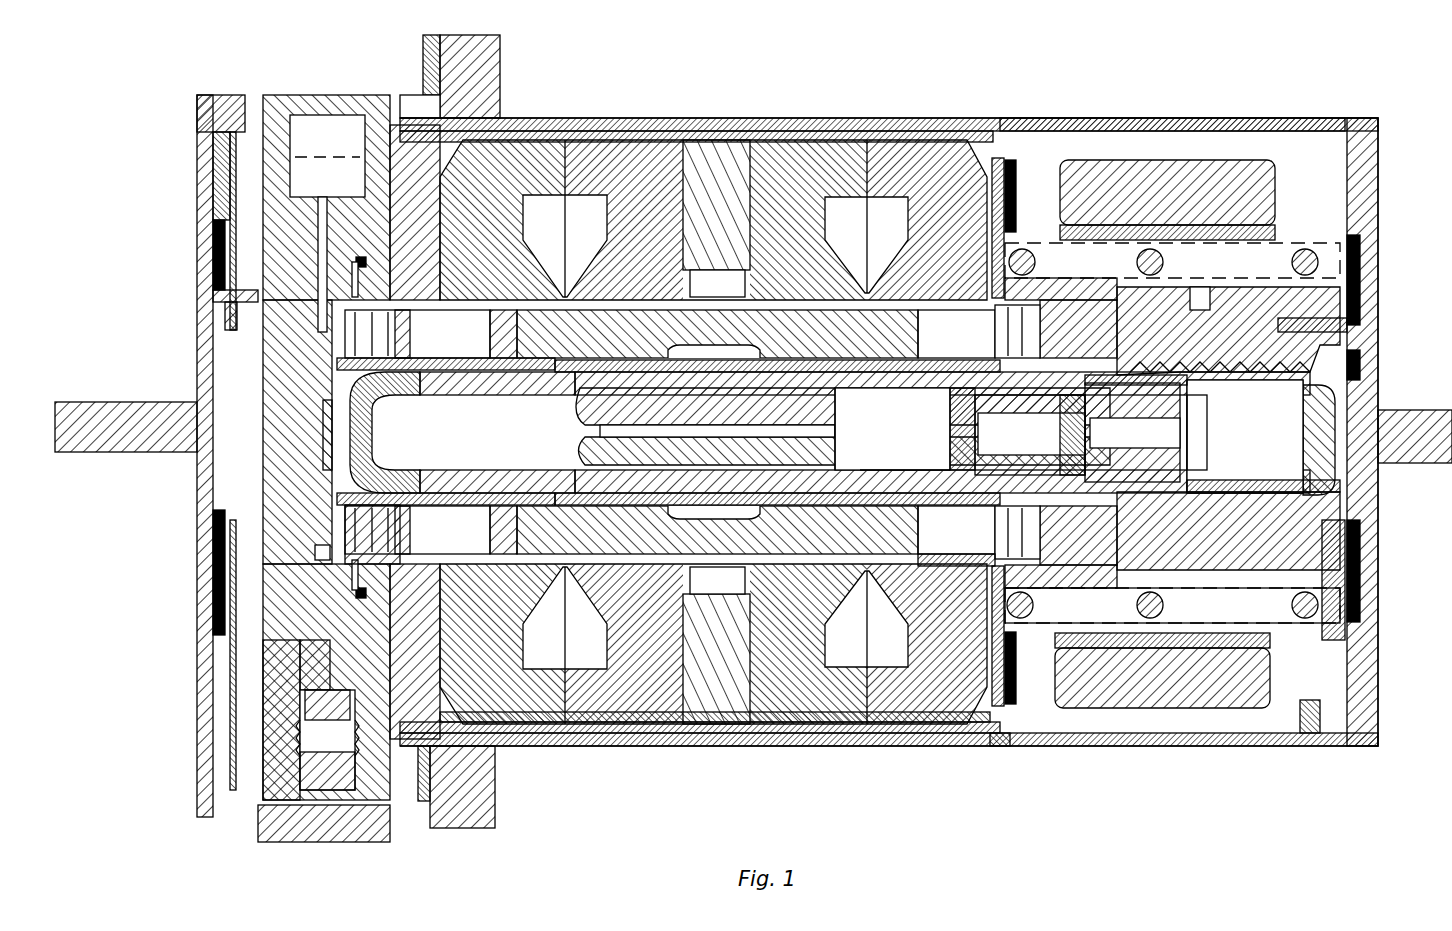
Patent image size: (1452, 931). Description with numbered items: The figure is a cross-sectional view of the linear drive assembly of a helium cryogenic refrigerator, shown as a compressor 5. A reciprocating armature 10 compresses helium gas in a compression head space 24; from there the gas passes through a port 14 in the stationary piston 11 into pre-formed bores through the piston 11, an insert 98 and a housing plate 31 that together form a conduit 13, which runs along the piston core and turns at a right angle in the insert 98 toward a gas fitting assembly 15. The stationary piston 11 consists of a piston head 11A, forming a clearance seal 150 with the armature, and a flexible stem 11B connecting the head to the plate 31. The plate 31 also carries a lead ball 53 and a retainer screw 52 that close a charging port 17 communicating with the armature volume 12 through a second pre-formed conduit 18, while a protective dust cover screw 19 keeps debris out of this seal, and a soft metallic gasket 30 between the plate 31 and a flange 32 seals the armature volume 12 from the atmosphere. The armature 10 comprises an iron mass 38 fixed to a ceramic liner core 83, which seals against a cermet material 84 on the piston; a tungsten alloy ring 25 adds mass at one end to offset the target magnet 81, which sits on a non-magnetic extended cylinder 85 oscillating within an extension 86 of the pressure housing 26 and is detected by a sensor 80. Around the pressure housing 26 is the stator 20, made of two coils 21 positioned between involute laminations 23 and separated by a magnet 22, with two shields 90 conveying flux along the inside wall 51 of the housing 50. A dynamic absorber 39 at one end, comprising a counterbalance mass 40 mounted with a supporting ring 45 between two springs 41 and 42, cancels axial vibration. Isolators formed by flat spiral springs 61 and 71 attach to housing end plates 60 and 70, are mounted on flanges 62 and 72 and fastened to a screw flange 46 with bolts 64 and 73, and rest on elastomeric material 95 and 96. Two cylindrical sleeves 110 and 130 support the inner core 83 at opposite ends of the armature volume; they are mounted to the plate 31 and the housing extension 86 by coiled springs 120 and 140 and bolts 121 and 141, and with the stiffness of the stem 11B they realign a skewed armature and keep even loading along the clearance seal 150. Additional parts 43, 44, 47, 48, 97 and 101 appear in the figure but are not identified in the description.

The compressor 5 is at (1206, 766).
The reciprocating armature 10 is at (920, 323).
The stationary piston 11 is at (566, 458).
The piston head 11A is at (582, 396).
The flexible stem 11B is at (478, 400).
The armature volume 12 is at (452, 342).
The conduit 13 is at (312, 300).
The port 14 is at (816, 438).
The gas fitting assembly 15 is at (343, 140).
The port 17 is at (300, 648).
The second pre-formed conduit 18 is at (320, 550).
The protective dust cover screw 19 is at (388, 838).
The stator 20 is at (800, 178).
The coils 21 is at (886, 205).
The magnet 22 is at (720, 150).
The involute laminations 23 is at (563, 726).
The compression head space 24 is at (914, 442).
The tungsten alloy ring 25 is at (494, 528).
The pressure housing 26 is at (942, 562).
The soft metallic gasket 30 is at (360, 255).
The plate 31 is at (300, 234).
The flange 32 is at (359, 602).
The iron mass 38 is at (565, 296).
The dynamic absorber 39 is at (1264, 150).
The counterbalance mass 40 is at (1140, 165).
The spring 41 is at (1036, 262).
The spring 42 is at (1306, 250).
The right hub 43 is at (1250, 524).
The ball 44 is at (1125, 322).
The supporting ring 45 is at (1258, 650).
The screw flange 46 is at (1355, 592).
The end plate 47 is at (1305, 748).
The partition plate 48 is at (1010, 165).
The housing 50 is at (918, 748).
The inside wall 51 is at (826, 738).
The retainer screw 52 is at (327, 740).
The lead ball 53 is at (310, 680).
The housing end plate 60 is at (1378, 228).
The isolator 61 is at (1362, 266).
The flange 62 is at (1362, 362).
The bolt 64 is at (1362, 330).
The housing end plate 70 is at (197, 215).
The isolator 71 is at (212, 297).
The flange 72 is at (222, 345).
The bolt 73 is at (212, 318).
The sensor 80 is at (1380, 410).
The target magnet 81 is at (1214, 395).
The liner core 83 is at (906, 390).
The cermet material 84 is at (838, 392).
The non-magnetic extended cylinder 85 is at (1180, 388).
The extension 86 is at (1246, 478).
The shields 90 is at (755, 748).
The elastomeric material 95 is at (1362, 628).
The elastomeric material 96 is at (197, 622).
The shell joint 97 is at (1005, 748).
The insert 98 is at (282, 442).
The ring 101 is at (390, 372).
The cylindrical sleeve 110 is at (386, 493).
The coiled spring 120 is at (335, 520).
The bolt 121 is at (440, 493).
The cylindrical sleeve 130 is at (995, 476).
The coiled spring 140 is at (1060, 500).
The bolt 141 is at (1095, 545).
The clearance seal 150 is at (862, 466).